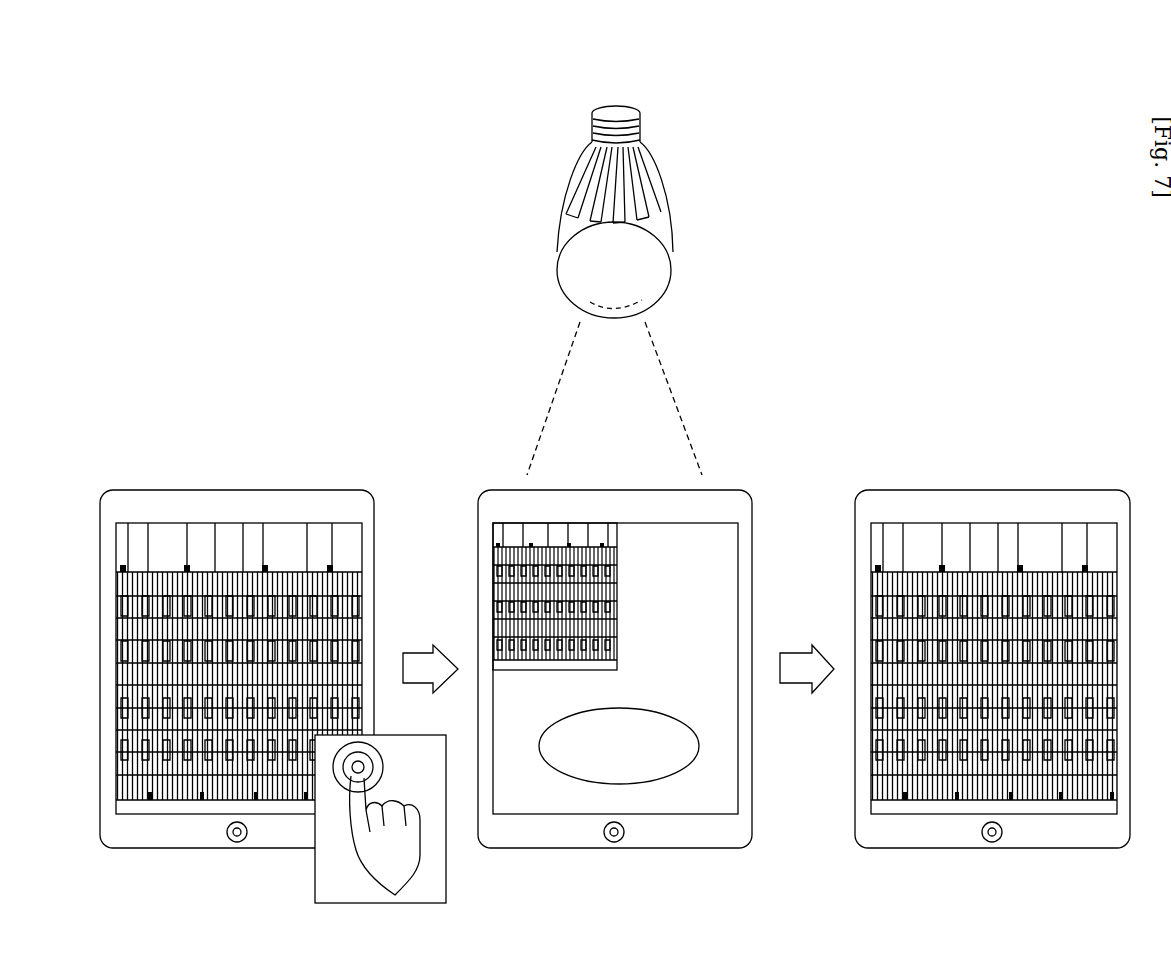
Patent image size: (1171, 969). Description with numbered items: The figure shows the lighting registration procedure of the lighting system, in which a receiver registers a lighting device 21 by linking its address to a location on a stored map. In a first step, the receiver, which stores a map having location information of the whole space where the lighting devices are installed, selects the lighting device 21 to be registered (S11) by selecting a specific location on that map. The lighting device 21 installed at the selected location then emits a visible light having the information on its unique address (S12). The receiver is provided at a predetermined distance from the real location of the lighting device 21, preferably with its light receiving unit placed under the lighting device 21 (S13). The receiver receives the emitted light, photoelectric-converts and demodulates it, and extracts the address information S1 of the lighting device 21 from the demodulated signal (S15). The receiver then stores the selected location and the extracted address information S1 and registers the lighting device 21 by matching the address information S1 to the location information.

The lighting device selection step S11 is at (224, 492).
The visible light emission step S12 is at (672, 196).
The receiver positioning step S13 is at (754, 516).
The address information extraction step S15 is at (985, 492).
The address information S1 is at (670, 387).
The lighting device 21 is at (672, 272).